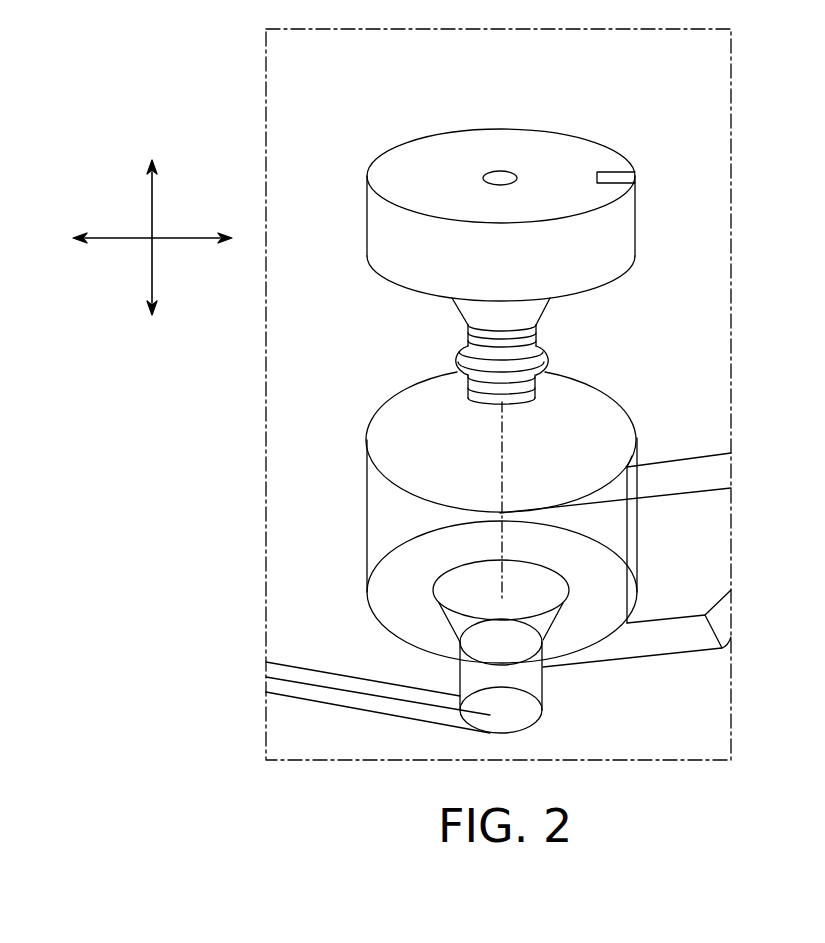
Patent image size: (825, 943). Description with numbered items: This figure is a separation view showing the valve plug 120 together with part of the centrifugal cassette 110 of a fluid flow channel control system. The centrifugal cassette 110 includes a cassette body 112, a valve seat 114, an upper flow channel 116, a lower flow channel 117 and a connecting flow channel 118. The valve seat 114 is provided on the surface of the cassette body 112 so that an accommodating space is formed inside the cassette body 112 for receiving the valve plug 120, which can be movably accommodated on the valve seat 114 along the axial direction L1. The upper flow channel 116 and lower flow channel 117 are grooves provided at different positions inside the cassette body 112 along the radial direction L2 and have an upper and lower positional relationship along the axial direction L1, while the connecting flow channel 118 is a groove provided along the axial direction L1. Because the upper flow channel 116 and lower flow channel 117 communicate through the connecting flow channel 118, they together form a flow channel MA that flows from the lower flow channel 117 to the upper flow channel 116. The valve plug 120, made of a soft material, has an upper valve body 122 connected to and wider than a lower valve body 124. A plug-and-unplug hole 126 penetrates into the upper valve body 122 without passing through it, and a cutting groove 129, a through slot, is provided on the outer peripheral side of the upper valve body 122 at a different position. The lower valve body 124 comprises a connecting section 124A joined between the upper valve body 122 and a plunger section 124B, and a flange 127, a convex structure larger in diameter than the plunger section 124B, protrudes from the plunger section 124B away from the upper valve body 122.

The centrifugal cassette 110 is at (492, 516).
The cassette body 112 is at (647, 526).
The valve seat 114 is at (607, 422).
The upper flow channel 116 is at (690, 640).
The lower flow channel 117 is at (351, 700).
The connecting flow channel 118 is at (527, 683).
The valve plug 120 is at (534, 173).
The upper valve body 122 is at (541, 146).
The lower valve body 124 is at (501, 351).
The connecting section 124A is at (456, 309).
The plunger section 124B is at (468, 338).
The plug-and-unplug hole 126 is at (496, 160).
The flange 127 is at (548, 356).
The cutting groove 129 is at (618, 166).
The flow channel MA is at (596, 612).
The axial direction L1 is at (152, 201).
The radial direction L2 is at (194, 238).